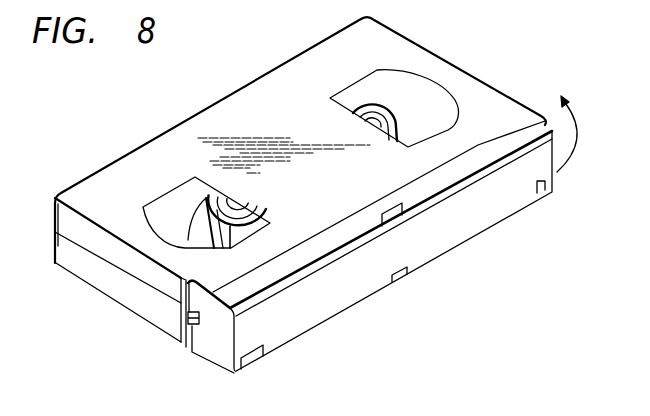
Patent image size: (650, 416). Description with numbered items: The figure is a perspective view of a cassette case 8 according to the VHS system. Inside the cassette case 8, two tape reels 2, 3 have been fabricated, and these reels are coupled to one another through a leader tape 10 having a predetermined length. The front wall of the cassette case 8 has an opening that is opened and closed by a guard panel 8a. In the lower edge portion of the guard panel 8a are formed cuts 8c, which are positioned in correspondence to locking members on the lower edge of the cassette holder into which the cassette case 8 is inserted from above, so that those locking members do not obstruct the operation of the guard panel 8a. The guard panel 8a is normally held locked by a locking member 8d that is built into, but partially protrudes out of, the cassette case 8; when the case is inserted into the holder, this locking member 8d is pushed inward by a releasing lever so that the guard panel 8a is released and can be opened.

The cassette case 8 is at (288, 104).
The guard panel 8a is at (337, 300).
The cuts 8c is at (250, 362).
The locking member 8d is at (190, 324).
The tape reel 2 is at (390, 110).
The tape reel 3 is at (203, 197).
The leader tape 10 is at (228, 237).